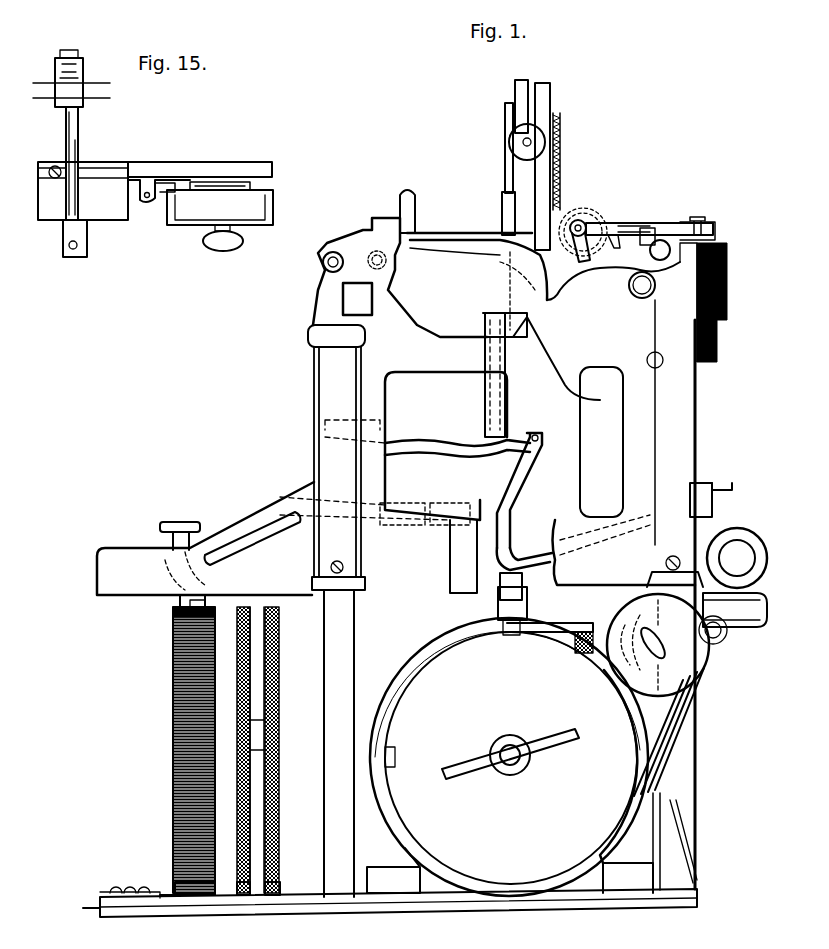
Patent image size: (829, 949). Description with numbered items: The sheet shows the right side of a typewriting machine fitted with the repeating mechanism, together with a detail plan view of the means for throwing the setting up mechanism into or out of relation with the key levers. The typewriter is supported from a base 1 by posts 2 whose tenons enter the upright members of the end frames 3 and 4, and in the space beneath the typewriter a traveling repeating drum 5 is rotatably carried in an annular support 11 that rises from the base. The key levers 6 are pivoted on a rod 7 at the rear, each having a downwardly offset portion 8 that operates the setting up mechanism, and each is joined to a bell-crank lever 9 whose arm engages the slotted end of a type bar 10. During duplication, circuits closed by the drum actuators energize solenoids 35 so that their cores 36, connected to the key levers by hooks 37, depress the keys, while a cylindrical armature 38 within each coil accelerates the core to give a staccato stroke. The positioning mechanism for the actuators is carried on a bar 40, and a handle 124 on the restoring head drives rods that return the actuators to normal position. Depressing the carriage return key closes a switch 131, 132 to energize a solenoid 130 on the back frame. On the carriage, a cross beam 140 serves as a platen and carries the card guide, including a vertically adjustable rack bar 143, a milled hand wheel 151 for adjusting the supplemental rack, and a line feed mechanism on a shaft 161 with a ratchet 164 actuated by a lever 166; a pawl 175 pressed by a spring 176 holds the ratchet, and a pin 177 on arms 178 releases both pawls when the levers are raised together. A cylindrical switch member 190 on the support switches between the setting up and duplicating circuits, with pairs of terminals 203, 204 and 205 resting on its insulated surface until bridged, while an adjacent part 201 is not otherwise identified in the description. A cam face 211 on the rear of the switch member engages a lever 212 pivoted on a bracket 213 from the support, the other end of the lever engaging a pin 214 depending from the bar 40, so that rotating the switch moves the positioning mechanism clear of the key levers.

In FIG. 1, the base 1 is at (322, 915).
In FIG. 1, the posts 2 is at (325, 765).
In FIG. 1, the end frame 3 is at (318, 452).
In FIG. 1, the end frame 4 is at (668, 447).
In FIG. 1, the drum 5 is at (509, 741).
In FIG. 15, the key levers 6 is at (90, 86).
In FIG. 1, the key levers 6 is at (412, 512).
In FIG. 1, the rod 7 is at (682, 530).
In FIG. 1, the downwardly offset portion 8 is at (524, 559).
In FIG. 1, the bell-crank lever 9 is at (530, 480).
In FIG. 1, the type bar 10 is at (405, 440).
In FIG. 15, the support 11 is at (262, 165).
In FIG. 1, the support 11 is at (432, 652).
In FIG. 1, the solenoids 35 is at (175, 808).
In FIG. 1, the cores 36 is at (182, 600).
In FIG. 1, the hooks 37 is at (165, 549).
In FIG. 1, the armature 38 is at (175, 885).
In FIG. 15, the bar 40 is at (68, 158).
In FIG. 1, the handle 124 is at (486, 772).
In FIG. 1, the solenoid 130 is at (762, 543).
In FIG. 1, the switch 131 is at (396, 526).
In FIG. 1, the switch 132 is at (449, 529).
In FIG. 1, the cross beam 140 is at (497, 272).
In FIG. 1, the rack bar 143 is at (552, 165).
In FIG. 1, the milled hand wheel 151 is at (537, 138).
In FIG. 1, the shaft 161 is at (580, 220).
In FIG. 1, the toothed disk or ratchet 164 is at (598, 208).
In FIG. 1, the lever 166 is at (704, 219).
In FIG. 1, the pawl 175 is at (624, 295).
In FIG. 1, the spring 176 is at (675, 223).
In FIG. 1, the pin 177 is at (612, 230).
In FIG. 1, the arms 178 is at (648, 228).
In FIG. 15, the cylindrical switch member 190 is at (266, 195).
In FIG. 1, the cylindrical switch member 190 is at (706, 625).
In FIG. 1, the blade 201 is at (707, 668).
In FIG. 1, the pair of terminals 203 is at (690, 700).
In FIG. 1, the pair of terminals 204 is at (685, 728).
In FIG. 1, the pair of terminals 205 is at (680, 745).
In FIG. 15, the cam face 211 is at (213, 182).
In FIG. 15, the lever 212 is at (176, 183).
In FIG. 15, the bracket 213 is at (148, 178).
In FIG. 15, the pin 214 is at (88, 238).